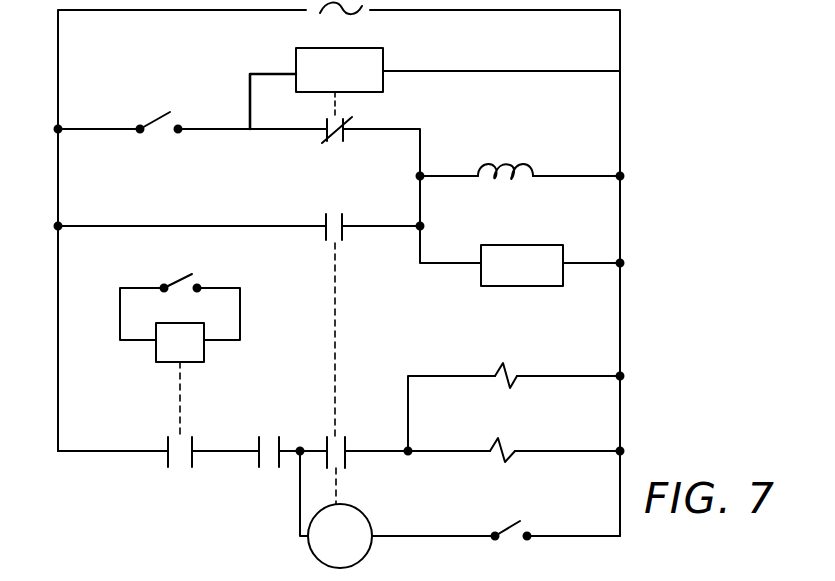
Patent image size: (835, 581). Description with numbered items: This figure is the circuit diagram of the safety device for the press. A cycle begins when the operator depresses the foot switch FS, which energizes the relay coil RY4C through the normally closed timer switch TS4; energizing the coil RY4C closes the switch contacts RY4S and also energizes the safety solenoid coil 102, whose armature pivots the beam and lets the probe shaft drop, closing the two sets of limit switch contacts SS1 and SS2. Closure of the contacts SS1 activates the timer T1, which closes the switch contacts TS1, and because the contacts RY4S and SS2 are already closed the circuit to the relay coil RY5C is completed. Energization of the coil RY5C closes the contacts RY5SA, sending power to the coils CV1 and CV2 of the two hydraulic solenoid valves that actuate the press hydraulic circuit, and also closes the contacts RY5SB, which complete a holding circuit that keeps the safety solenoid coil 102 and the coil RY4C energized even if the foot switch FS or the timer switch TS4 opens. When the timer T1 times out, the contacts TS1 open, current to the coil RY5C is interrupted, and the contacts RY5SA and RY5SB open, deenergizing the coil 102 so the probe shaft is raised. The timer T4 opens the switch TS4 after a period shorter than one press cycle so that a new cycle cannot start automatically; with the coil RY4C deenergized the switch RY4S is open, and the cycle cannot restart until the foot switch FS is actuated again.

The foot switch FS is at (147, 123).
The timer T4 is at (339, 70).
The timer switch TS4 is at (356, 160).
The safety solenoid coil 102 is at (508, 172).
The switch contacts RY5SB is at (362, 205).
The relay coil RY4C is at (522, 265).
The switch contacts SS1 is at (198, 284).
The timer T1 is at (180, 342).
The switch contacts TS1 is at (158, 466).
The switch contacts RY4S is at (255, 458).
The switch contacts RY5SA is at (362, 428).
The coil CV1 is at (504, 376).
The coil CV2 is at (504, 452).
The relay coil RY5C is at (340, 536).
The switch contacts SS2 is at (528, 531).